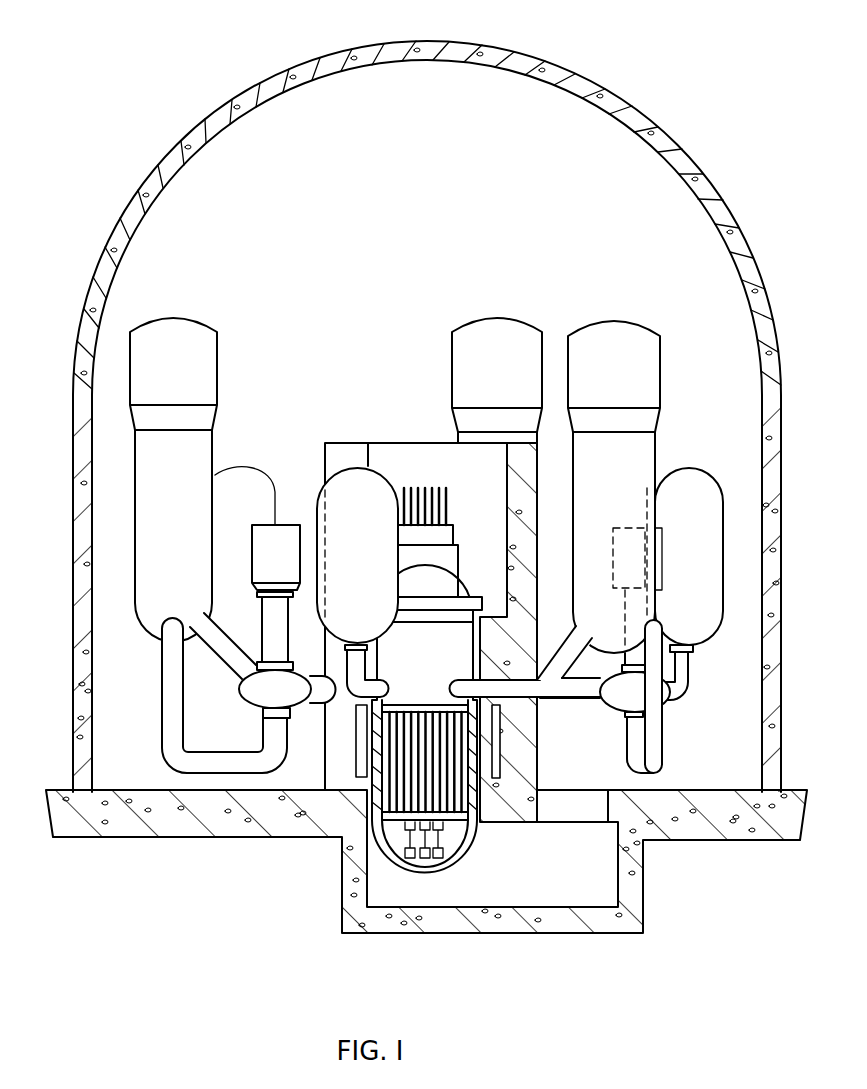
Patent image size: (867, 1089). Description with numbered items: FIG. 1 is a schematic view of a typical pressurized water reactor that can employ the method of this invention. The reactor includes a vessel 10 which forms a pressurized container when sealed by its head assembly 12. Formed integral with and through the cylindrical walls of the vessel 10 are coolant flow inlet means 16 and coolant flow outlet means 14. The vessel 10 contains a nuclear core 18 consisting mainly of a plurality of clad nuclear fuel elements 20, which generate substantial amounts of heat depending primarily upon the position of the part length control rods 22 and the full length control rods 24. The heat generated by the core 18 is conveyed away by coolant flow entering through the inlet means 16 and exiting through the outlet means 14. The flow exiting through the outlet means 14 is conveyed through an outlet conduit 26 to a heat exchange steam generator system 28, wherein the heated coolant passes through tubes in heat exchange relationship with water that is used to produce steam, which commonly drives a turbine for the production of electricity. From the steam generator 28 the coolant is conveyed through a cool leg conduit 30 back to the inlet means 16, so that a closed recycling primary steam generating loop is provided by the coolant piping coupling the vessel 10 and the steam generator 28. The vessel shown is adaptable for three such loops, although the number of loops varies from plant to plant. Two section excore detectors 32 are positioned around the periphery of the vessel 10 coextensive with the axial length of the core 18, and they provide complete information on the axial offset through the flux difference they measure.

The vessel 10 is at (464, 662).
The head assembly 12 is at (464, 589).
The coolant flow outlet means 14 is at (458, 684).
The coolant flow inlet means 16 is at (386, 686).
The nuclear core 18 is at (413, 777).
The clad nuclear fuel elements 20 is at (471, 820).
The part length control rods 22 is at (420, 489).
The full length control rods 24 is at (437, 489).
The outlet conduit 26 is at (222, 648).
The heat exchange steam generator system 28 is at (156, 368).
The cool leg conduit 30 is at (337, 693).
The excore detectors 32 is at (356, 751).